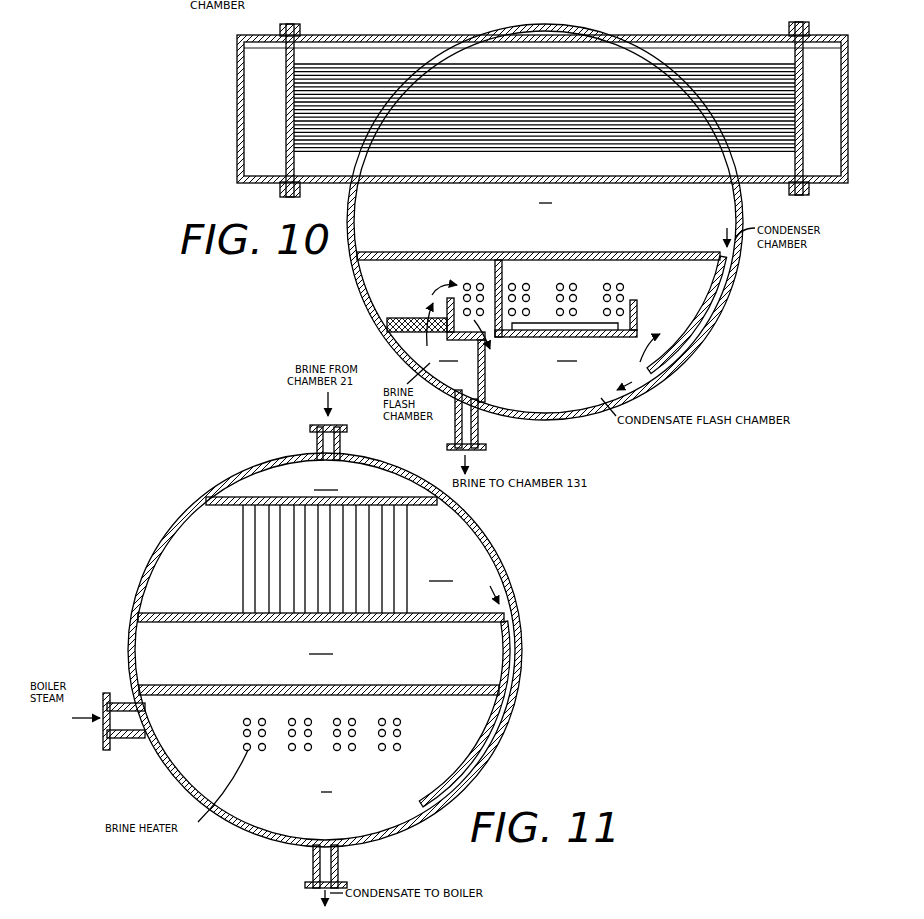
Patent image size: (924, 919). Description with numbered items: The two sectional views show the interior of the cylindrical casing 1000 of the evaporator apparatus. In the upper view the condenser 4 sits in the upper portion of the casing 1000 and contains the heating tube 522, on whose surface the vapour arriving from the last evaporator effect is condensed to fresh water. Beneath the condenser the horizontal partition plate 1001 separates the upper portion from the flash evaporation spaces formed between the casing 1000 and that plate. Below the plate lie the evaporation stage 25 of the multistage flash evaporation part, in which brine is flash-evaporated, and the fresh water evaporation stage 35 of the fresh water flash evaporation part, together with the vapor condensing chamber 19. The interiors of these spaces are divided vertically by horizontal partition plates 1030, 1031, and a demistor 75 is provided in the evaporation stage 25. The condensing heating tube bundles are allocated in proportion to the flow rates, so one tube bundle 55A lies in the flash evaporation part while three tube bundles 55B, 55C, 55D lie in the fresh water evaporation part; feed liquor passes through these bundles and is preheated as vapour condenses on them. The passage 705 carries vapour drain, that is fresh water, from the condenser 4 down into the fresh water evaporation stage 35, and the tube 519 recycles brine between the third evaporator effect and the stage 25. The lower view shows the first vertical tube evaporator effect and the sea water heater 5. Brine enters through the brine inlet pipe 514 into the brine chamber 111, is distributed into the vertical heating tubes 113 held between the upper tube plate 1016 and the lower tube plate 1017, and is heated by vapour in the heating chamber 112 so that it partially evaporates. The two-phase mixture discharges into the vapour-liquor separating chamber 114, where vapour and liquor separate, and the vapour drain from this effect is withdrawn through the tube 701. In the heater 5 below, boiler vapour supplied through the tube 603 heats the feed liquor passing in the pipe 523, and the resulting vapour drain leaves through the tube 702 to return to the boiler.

In FIG. 10, the cylindrical casing 1000 is at (588, 23).
In FIG. 11, the cylindrical casing 1000 is at (260, 472).
In FIG. 10, the heating tube 522 is at (618, 153).
In FIG. 10, the condenser 4 is at (516, 185).
In FIG. 10, the horizontal partition plate 1001 is at (438, 252).
In FIG. 11, the horizontal partition plate 1001 is at (435, 685).
In FIG. 10, the passage 705 is at (680, 340).
In FIG. 10, the fresh water evaporation stage 35 is at (567, 353).
In FIG. 10, the evaporation stage 25 is at (448, 353).
In FIG. 10, the demistor 75 is at (412, 318).
In FIG. 10, the horizontal partition plate 1030 is at (422, 284).
In FIG. 10, the vapor condensing chamber 19 is at (378, 272).
In FIG. 10, the condensing heating tube bundle 55A is at (480, 282).
In FIG. 10, the condensing heating tube bundle 55B is at (511, 284).
In FIG. 10, the condensing heating tube bundle 55C is at (562, 284).
In FIG. 10, the condensing heating tube bundle 55D is at (627, 291).
In FIG. 10, the horizontal partition plate 1031 is at (639, 320).
In FIG. 10, the tube 519 is at (486, 428).
In FIG. 11, the brine inlet pipe 514 is at (311, 443).
In FIG. 11, the brine chamber 111 is at (327, 482).
In FIG. 11, the upper tube plate 1016 is at (432, 506).
In FIG. 11, the vertical heating tubes 113 is at (245, 558).
In FIG. 11, the heating chamber 112 is at (442, 573).
In FIG. 11, the lower tube plate 1017 is at (195, 613).
In FIG. 11, the vapour-liquor separating chamber 114 is at (322, 646).
In FIG. 11, the tube 701 is at (497, 755).
In FIG. 11, the tube 603 is at (134, 740).
In FIG. 11, the pipe 523 is at (402, 722).
In FIG. 11, the sea water heater 5 is at (326, 784).
In FIG. 11, the tube 702 is at (312, 860).